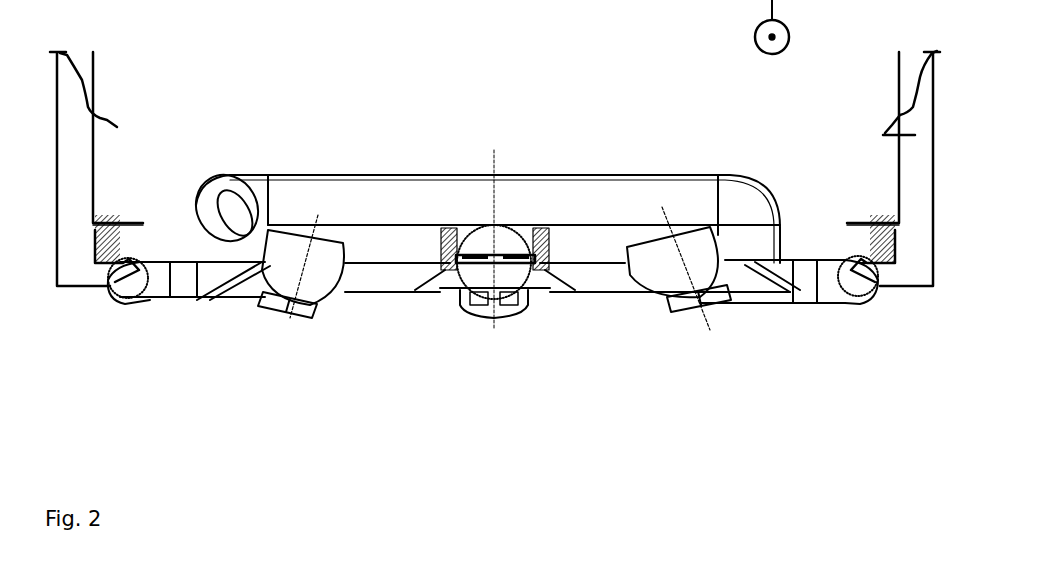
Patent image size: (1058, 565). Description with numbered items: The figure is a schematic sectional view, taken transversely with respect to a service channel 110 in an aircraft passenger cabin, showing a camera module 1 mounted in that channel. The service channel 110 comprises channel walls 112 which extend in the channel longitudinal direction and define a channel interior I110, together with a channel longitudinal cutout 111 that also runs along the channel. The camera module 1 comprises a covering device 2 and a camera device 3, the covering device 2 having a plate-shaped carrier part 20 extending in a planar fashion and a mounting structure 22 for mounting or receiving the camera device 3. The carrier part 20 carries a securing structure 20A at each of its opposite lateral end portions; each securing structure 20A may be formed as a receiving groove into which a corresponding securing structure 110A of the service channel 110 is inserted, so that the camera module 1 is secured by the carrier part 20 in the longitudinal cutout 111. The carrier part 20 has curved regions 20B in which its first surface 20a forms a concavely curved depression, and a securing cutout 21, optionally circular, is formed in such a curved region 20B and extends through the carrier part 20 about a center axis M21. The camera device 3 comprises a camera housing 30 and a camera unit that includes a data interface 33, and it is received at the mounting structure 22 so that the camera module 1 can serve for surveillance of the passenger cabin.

The camera module 1 is at (775, 437).
The covering device 2 is at (762, 343).
The camera device 3 is at (458, 277).
The carrier part 20 is at (595, 293).
The first surface 20a is at (388, 293).
The securing structure 20A is at (127, 287).
The curved region 20B is at (238, 290).
The securing cutout 21 is at (536, 277).
The mounting structure 22 is at (437, 238).
The camera housing 30 is at (516, 228).
The data interface 33 is at (478, 252).
The center axis M21 is at (318, 226).
The service channel 110 is at (887, 135).
The securing structure 110A is at (113, 273).
The channel longitudinal cutout 111 is at (167, 233).
The channel wall 112 is at (78, 107).
The channel interior I110 is at (624, 63).